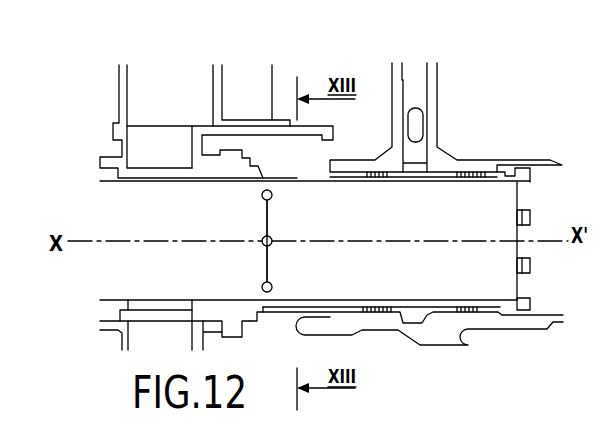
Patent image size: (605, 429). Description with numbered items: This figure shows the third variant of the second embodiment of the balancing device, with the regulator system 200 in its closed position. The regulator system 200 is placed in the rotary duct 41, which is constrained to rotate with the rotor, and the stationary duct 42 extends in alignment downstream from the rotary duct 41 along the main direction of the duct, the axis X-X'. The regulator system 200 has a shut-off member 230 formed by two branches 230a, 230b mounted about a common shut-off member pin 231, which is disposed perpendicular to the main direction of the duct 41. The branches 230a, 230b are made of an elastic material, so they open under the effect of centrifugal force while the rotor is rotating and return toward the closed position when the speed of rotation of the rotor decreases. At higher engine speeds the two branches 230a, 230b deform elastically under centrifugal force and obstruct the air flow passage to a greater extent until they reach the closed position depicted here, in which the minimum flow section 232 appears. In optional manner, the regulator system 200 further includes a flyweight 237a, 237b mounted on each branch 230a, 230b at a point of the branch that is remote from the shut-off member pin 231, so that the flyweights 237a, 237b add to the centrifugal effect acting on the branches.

The regulator system 200 is at (371, 78).
The shut-off member 230 is at (283, 195).
The branch 230a is at (263, 211).
The branch 230b is at (265, 272).
The shut-off member pin 231 is at (262, 243).
The minimum flow section 232 is at (269, 292).
The flyweight 237a is at (271, 198).
The flyweight 237b is at (273, 287).
The rotary duct 41 is at (115, 223).
The stationary duct 42 is at (565, 213).